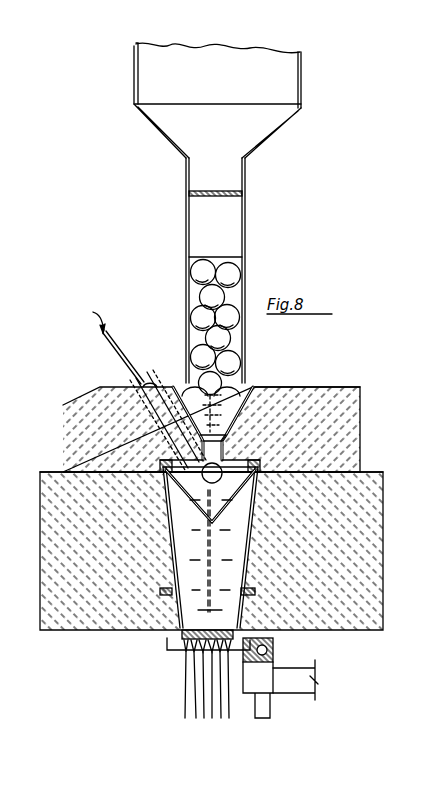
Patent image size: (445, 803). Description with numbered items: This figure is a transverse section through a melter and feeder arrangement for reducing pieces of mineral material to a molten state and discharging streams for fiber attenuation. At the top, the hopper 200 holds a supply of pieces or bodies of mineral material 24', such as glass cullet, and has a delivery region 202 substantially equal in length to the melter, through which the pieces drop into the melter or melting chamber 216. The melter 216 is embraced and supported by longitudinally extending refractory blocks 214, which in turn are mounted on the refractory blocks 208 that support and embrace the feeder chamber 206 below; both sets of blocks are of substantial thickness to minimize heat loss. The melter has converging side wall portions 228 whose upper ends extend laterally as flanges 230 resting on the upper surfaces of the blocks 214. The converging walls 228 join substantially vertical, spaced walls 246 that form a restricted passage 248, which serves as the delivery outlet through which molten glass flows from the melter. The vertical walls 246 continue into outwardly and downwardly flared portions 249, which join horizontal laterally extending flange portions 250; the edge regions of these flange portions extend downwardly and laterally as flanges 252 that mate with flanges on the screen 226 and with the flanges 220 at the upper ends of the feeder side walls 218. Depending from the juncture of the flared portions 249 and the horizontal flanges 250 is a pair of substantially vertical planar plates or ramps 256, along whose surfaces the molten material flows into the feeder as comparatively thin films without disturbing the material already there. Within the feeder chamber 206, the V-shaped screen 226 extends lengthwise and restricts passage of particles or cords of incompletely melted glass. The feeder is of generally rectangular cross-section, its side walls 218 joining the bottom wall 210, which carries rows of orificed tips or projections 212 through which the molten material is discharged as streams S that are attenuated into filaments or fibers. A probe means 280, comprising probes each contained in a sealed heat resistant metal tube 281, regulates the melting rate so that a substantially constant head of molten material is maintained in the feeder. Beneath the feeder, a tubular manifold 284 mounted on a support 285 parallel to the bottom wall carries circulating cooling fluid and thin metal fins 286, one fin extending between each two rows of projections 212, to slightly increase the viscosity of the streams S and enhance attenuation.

The hopper 200 is at (303, 75).
The delivery region 202 is at (245, 178).
The pieces or bodies of mineral material 24' is at (231, 316).
The probe means 280 is at (85, 318).
The metal tube 281 is at (122, 376).
The flanges 230 is at (152, 386).
The side wall portions 228 is at (188, 418).
The blocks 214 is at (63, 405).
The melter or melting chamber 216 is at (252, 398).
The vertical walls 246 is at (200, 440).
The flared portions 249 is at (203, 445).
The flanges 252 is at (165, 464).
The restricted passage 248 is at (228, 438).
The horizontal flange portions 250 is at (222, 452).
The plates or ramps 256 is at (258, 472).
The blocks 208 is at (46, 624).
The flanges 220 is at (158, 476).
The feeder chamber 206 is at (166, 555).
The screen 226 is at (170, 518).
The side walls 218 is at (165, 590).
The bottom wall 210 is at (183, 632).
The orificed tips or projections 212 is at (182, 642).
The metal fins 286 is at (168, 648).
The streams S is at (200, 665).
The tubular manifold 284 is at (275, 645).
The support 285 is at (308, 693).